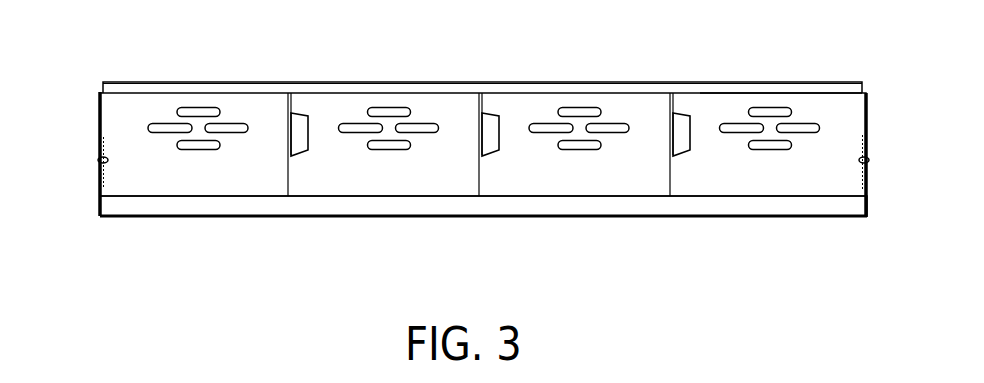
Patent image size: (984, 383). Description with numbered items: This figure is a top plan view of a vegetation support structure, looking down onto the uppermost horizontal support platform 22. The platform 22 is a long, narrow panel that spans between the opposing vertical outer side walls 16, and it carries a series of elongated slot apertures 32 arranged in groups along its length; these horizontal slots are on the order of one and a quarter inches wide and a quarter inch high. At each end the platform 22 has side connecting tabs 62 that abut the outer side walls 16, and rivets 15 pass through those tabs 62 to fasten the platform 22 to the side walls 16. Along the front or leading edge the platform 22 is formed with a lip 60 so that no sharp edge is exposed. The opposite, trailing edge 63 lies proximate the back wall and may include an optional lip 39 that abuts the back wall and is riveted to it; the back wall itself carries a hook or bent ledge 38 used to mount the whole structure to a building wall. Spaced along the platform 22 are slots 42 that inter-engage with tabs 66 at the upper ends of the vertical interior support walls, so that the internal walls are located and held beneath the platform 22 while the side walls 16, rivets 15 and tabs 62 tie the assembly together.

The rivets 15 is at (100, 159).
The outer side walls 16 is at (100, 107).
The uppermost horizontal support platform 22 is at (655, 190).
The elongated slot apertures 32 is at (197, 107).
The hook/bent ledge 38 is at (812, 82).
The lip 39 is at (837, 98).
The slots 42 is at (481, 113).
The lip 60 is at (197, 208).
The side connecting tabs 62 is at (100, 147).
The trailing edge 63 is at (542, 85).
The tabs 66 is at (302, 138).